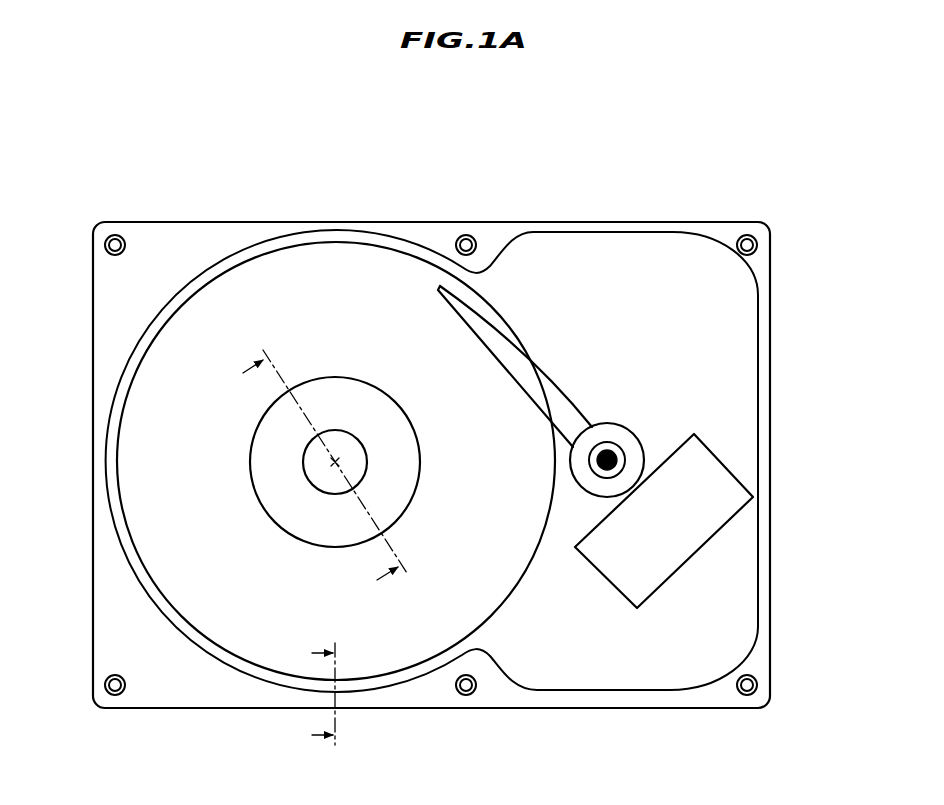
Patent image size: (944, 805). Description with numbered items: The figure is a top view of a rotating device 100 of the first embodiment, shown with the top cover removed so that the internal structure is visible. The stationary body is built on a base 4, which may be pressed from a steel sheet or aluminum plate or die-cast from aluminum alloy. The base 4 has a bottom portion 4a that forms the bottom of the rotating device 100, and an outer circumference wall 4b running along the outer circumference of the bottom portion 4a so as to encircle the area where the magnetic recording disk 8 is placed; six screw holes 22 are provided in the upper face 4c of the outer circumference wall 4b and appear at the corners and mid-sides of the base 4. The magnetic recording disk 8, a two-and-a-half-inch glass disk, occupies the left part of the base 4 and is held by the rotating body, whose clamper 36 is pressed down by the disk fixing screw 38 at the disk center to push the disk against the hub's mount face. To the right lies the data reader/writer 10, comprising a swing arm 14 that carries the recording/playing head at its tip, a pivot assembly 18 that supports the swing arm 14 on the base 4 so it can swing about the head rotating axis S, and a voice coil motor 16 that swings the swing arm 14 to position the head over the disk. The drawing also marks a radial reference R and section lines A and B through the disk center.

The rotating device 100 is at (435, 800).
The base 4 is at (772, 362).
The bottom portion 4a is at (561, 267).
The outer circumference wall 4b is at (188, 247).
The upper face 4c is at (93, 292).
The magnetic recording disk 8 is at (337, 282).
The data reader/writer 10 is at (650, 447).
The swing arm 14 is at (573, 401).
The voice coil motor 16 is at (720, 484).
The pivot assembly 18 is at (630, 446).
The screw holes 22 is at (113, 234).
The clamper 36 is at (280, 443).
The disk fixing screw 38 is at (313, 460).
The head rotating axis S is at (610, 463).
The rotation center / radius R is at (335, 462).
The section line A- A is at (312, 694).
The section line B- B is at (313, 474).